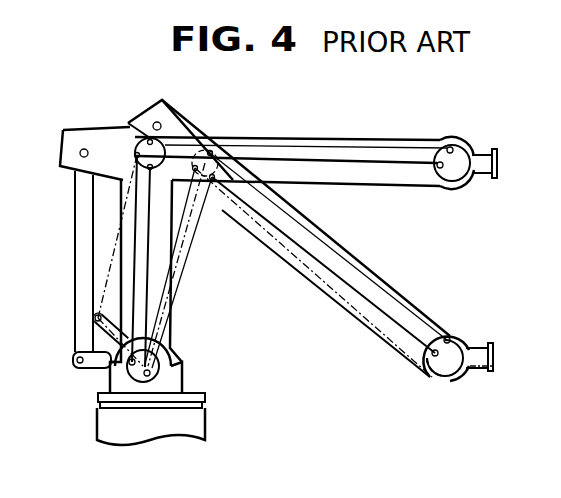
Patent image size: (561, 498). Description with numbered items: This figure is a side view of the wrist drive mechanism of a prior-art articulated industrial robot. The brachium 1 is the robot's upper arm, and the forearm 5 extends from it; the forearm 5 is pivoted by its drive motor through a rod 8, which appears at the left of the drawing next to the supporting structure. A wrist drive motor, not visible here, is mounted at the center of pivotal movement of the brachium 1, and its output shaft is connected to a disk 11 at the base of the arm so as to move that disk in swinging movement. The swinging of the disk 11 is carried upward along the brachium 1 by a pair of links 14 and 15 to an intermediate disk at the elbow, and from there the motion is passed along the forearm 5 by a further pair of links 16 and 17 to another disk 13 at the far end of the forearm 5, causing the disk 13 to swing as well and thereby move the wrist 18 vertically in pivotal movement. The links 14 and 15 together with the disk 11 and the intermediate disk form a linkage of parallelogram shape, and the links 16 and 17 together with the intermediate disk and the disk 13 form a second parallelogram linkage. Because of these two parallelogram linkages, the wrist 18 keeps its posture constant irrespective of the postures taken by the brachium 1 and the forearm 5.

The brachium 1 is at (162, 293).
The forearm 5 is at (289, 143).
The rod 8 is at (78, 195).
The disk 11 is at (160, 364).
The disk 13 is at (453, 178).
The link 14 is at (132, 233).
The link 15 is at (123, 260).
The link 16 is at (362, 165).
The link 17 is at (362, 145).
The wrist 18 is at (484, 157).